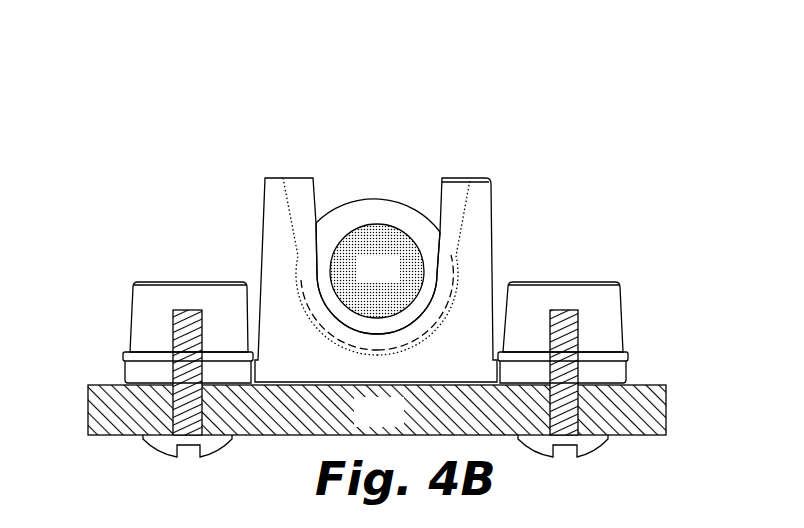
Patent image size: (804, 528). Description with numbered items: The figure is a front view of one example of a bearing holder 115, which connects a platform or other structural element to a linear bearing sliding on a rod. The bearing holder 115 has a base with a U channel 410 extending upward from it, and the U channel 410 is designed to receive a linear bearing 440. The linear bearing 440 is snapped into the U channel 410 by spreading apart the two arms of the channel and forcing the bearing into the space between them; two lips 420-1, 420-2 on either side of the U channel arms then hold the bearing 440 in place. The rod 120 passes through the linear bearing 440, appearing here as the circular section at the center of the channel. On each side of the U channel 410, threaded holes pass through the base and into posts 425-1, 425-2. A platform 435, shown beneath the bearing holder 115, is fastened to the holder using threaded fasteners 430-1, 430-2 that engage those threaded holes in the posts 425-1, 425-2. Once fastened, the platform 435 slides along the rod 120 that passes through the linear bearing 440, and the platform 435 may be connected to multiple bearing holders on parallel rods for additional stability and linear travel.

The bearing holder 115 is at (668, 109).
The rod 120 is at (400, 281).
The U channel 410 is at (268, 270).
The lip 420-1 is at (450, 232).
The lip 420-2 is at (295, 230).
The post 425-1 is at (612, 303).
The post 425-2 is at (148, 302).
The threaded fastener 430-1 is at (592, 442).
The threaded fastener 430-2 is at (163, 443).
The platform 435 is at (401, 423).
The linear bearing 440 is at (378, 207).